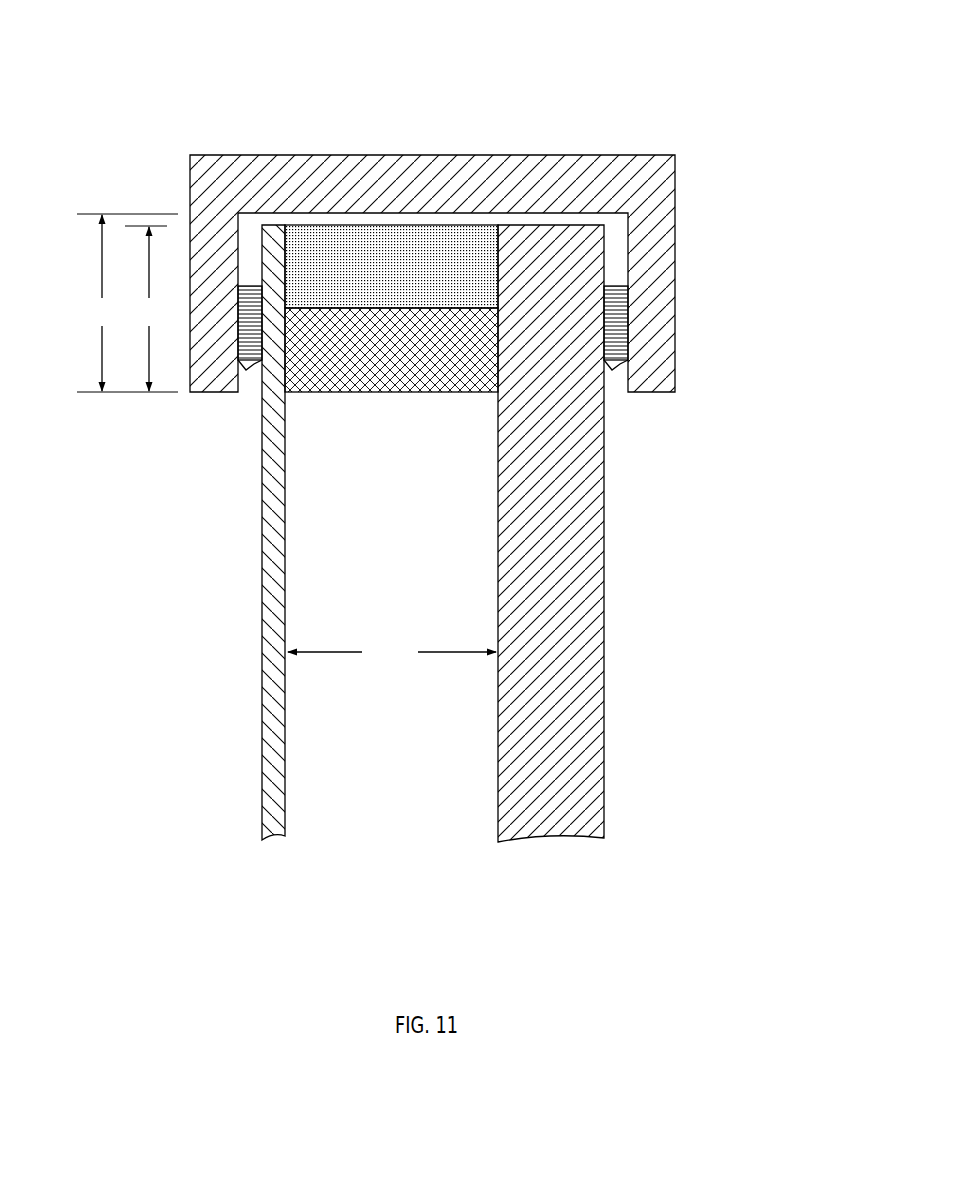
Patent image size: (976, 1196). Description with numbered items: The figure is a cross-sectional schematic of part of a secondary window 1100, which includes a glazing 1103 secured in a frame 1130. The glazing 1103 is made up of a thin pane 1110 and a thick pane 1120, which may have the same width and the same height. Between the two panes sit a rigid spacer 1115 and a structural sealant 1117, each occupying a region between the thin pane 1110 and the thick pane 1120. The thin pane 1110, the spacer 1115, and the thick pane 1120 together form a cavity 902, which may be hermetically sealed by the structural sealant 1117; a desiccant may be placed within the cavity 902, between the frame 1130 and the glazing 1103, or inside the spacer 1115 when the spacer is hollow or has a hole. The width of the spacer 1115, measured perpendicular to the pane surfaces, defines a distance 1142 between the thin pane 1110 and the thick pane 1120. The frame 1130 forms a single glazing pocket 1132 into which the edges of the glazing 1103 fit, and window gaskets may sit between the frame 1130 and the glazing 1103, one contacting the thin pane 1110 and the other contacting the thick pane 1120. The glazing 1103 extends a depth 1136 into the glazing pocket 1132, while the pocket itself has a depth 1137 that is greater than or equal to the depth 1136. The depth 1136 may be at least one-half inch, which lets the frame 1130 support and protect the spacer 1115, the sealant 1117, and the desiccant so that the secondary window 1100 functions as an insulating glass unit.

The secondary window 1100 is at (185, 92).
The frame 1130 is at (485, 189).
The glazing pocket 1132 is at (615, 267).
The depth 1136 is at (146, 308).
The depth 1137 is at (127, 303).
The glazing 1103 is at (427, 596).
The thin pane 1110 is at (273, 841).
The thick pane 1120 is at (573, 560).
The structural sealant 1117 is at (450, 278).
The rigid spacer 1115 is at (447, 360).
The cavity 902 is at (450, 511).
The distance 1142 is at (392, 648).